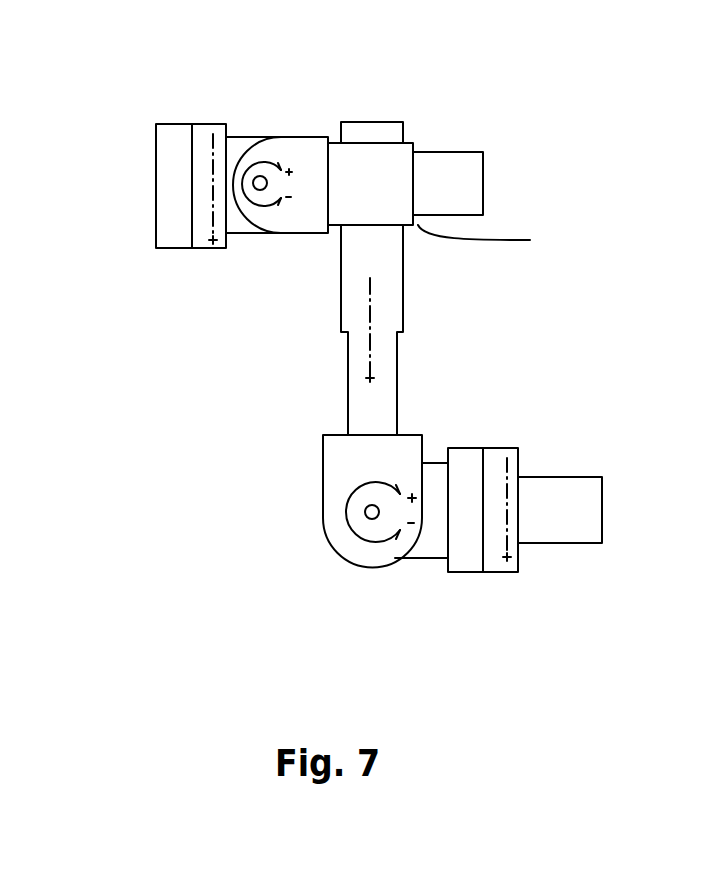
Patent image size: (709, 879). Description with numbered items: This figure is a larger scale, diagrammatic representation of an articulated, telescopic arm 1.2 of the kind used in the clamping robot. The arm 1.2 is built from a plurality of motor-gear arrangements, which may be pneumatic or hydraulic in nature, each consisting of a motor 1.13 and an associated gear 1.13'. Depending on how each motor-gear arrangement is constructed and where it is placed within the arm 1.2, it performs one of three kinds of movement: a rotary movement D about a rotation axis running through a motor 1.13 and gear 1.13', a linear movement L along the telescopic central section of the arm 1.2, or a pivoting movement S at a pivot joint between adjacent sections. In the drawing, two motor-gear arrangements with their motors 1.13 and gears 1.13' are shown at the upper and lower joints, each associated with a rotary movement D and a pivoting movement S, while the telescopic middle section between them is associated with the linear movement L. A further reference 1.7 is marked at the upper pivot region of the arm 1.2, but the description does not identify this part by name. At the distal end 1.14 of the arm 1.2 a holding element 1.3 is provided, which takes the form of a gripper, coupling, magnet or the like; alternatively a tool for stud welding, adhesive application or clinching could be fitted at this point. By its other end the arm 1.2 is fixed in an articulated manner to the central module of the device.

The articulated, telescopic arm 1.2 is at (455, 126).
The distal end 1.14 is at (587, 420).
The pivot joint 1.7 is at (263, 178).
The motor 1.13 is at (346, 348).
The gear 1.13' is at (395, 454).
The holding element 1.3 is at (578, 543).
The rotary movement D is at (213, 185).
The pivoting movement S is at (283, 205).
The linear movement L is at (375, 340).